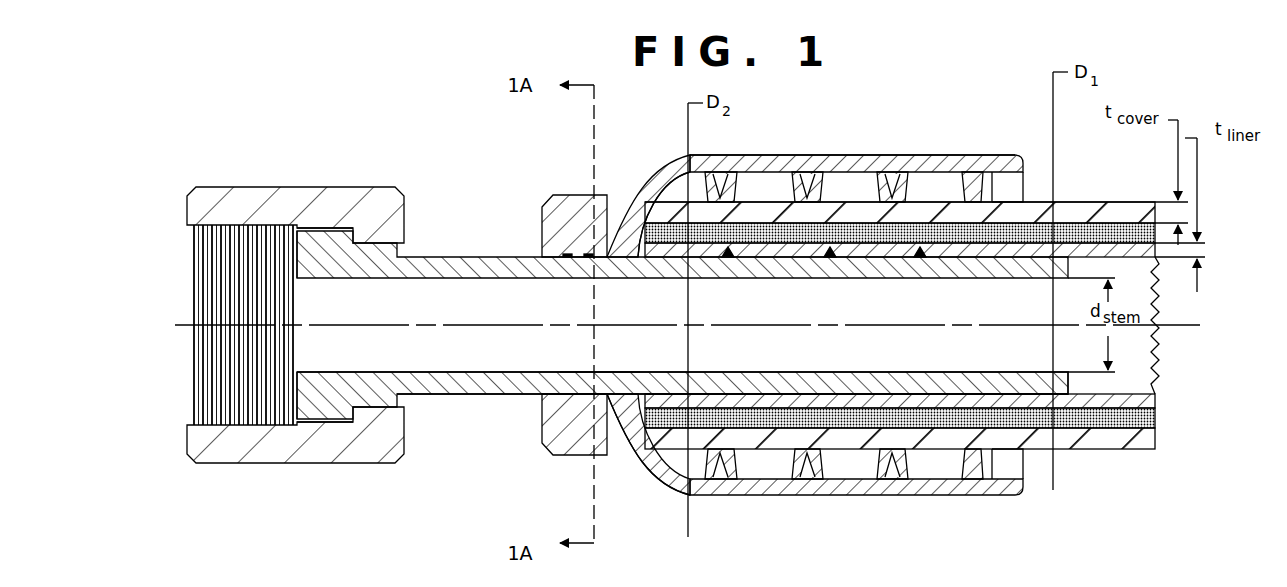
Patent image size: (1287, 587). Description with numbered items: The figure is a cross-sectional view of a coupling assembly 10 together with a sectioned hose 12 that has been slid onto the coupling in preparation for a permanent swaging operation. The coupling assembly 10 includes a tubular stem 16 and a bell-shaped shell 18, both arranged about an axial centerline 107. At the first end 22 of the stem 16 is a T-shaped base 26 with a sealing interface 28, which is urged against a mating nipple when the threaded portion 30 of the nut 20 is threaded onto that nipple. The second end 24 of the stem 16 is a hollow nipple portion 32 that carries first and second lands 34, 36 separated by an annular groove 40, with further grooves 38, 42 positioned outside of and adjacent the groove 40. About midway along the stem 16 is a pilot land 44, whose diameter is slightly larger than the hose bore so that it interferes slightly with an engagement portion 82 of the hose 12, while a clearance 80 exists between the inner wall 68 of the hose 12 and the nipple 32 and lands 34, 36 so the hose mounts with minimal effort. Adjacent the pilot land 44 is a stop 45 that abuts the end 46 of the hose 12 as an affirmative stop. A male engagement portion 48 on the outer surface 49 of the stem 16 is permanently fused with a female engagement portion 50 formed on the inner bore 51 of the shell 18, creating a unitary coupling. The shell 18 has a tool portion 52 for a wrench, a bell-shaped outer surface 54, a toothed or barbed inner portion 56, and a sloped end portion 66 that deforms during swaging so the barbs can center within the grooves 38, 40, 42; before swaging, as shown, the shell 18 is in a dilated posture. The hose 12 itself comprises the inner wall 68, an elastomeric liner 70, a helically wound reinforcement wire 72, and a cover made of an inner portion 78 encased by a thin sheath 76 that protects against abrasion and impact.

The coupling assembly 10 is at (824, 115).
The hose 12 is at (1045, 456).
The tubular stem 16 is at (428, 398).
The bell-shaped shell 18 is at (890, 155).
The nut 20 is at (243, 187).
The first end 22 is at (335, 232).
The second end 24 is at (607, 398).
The T-shaped base 26 is at (327, 427).
The sealing interface 28 is at (298, 383).
The threaded portion 30 is at (200, 232).
The hollow nipple portion 32 is at (984, 200).
The first land 34 is at (770, 250).
The second land 36 is at (875, 240).
The groove 38 is at (728, 258).
The annular groove 40 is at (830, 253).
The groove 42 is at (920, 250).
The pilot land 44 is at (722, 200).
The stop 45 is at (617, 247).
The end of hose 46 is at (640, 200).
The male engagement portion 48 is at (568, 254).
The outer surface 49 is at (548, 238).
The female engagement portion 50 is at (547, 395).
The inner bore 51 is at (594, 378).
The tool portion 52 is at (578, 254).
The bell-shaped outer surface 54 is at (937, 497).
The toothed or barbed inner portion 56 is at (760, 467).
The sloped end portion 66 is at (670, 487).
The inner wall 68 is at (1125, 367).
The liner 70 is at (1125, 402).
The reinforcement wire 72 is at (1157, 427).
The sheath 76 is at (1100, 213).
The inner portion of cover 78 is at (1075, 202).
The clearance 80 is at (918, 375).
The engagement portion 82 is at (703, 387).
The axial centerline 107 is at (183, 318).